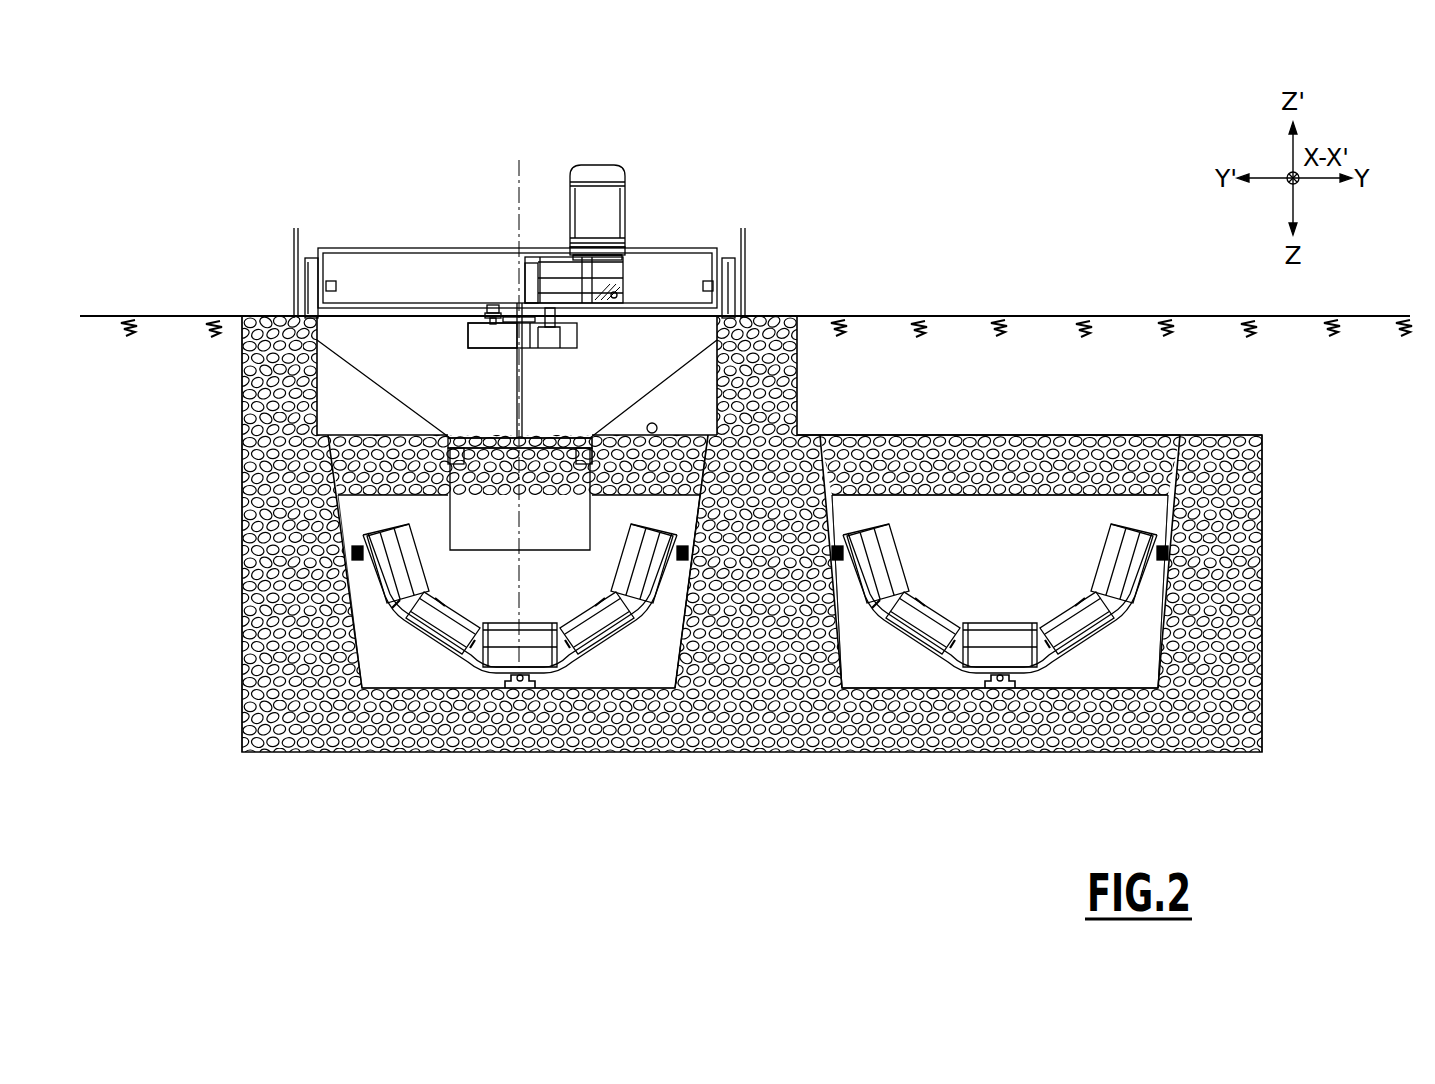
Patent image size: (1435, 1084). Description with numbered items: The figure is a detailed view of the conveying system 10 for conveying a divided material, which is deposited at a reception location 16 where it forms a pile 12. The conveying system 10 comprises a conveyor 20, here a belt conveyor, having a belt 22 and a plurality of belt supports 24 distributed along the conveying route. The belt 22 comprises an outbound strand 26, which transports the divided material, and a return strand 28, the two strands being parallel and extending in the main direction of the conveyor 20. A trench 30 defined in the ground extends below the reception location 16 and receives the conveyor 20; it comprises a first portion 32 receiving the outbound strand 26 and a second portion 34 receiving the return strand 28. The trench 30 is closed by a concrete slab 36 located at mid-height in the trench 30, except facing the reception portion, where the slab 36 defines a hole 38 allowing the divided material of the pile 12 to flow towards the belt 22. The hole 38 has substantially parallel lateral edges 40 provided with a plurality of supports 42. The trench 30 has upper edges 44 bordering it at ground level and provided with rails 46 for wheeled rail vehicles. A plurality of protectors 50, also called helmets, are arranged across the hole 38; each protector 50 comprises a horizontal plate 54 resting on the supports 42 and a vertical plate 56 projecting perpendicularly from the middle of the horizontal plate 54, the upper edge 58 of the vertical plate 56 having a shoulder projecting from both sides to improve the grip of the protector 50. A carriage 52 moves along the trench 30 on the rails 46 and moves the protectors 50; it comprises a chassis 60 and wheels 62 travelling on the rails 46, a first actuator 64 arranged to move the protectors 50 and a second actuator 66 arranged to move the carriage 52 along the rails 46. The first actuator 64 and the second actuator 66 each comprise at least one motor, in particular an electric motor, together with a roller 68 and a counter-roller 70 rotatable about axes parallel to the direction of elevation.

The conveying system 10 is at (1290, 426).
The pile 12 is at (517, 378).
The reception location 16 is at (243, 315).
The conveyor 20 is at (846, 508).
The belt 22 is at (1002, 614).
The belt supports 24 is at (1130, 565).
The outbound strand 26 is at (440, 537).
The return strand 28 is at (904, 538).
The trench 30 is at (1213, 822).
The first portion 32 is at (341, 759).
The second portion 34 is at (1185, 759).
The slab 36 is at (1157, 460).
The hole 38 is at (520, 499).
The lateral edges 40 is at (665, 520).
The supports 42 is at (582, 437).
The upper edges 44 is at (292, 315).
The rails 46 is at (305, 323).
The protectors 50 is at (479, 323).
The carriage 52 is at (627, 264).
The horizontal plate 54 is at (546, 436).
The vertical plate 56 is at (524, 378).
The upper edge 58 is at (513, 390).
The chassis 60 is at (385, 247).
The wheels 62 is at (311, 257).
The first actuator 64 is at (600, 162).
The second actuator 66 is at (597, 257).
The roller 68 is at (477, 349).
The counter-roller 70 is at (578, 338).